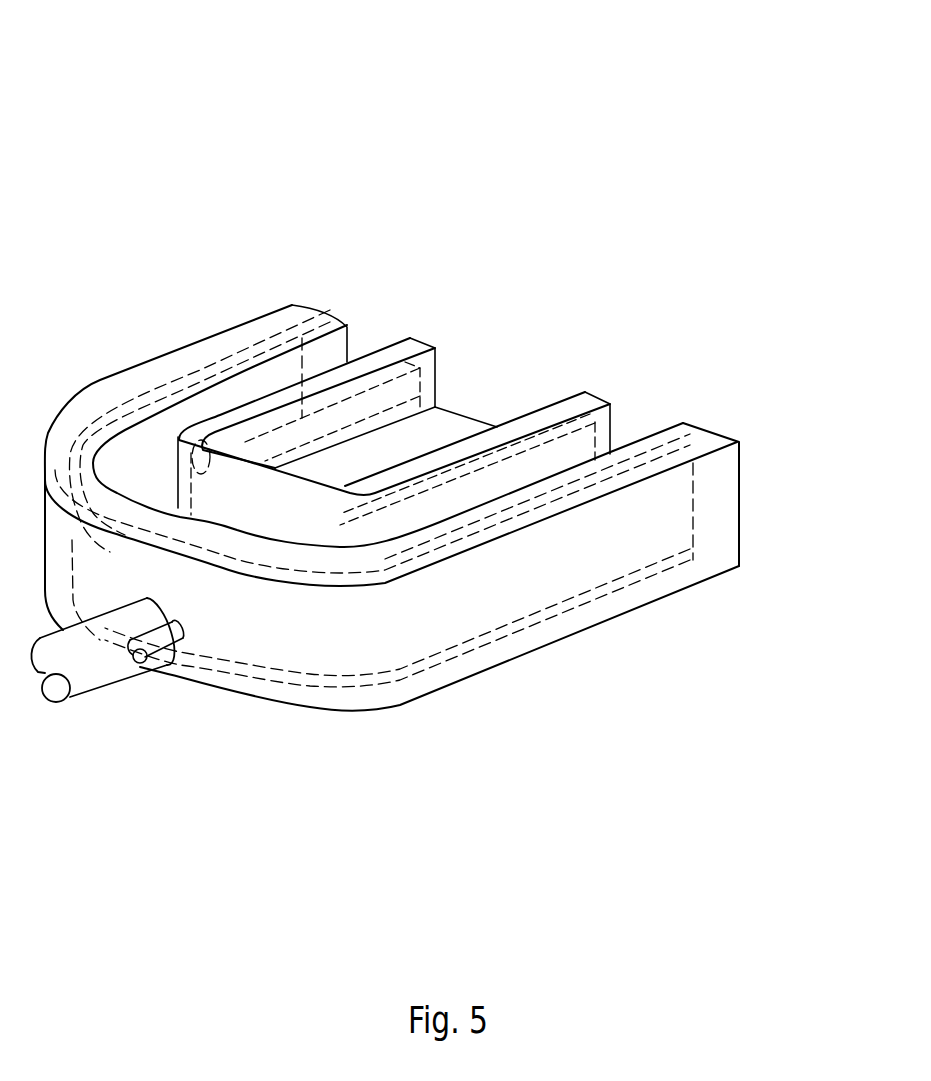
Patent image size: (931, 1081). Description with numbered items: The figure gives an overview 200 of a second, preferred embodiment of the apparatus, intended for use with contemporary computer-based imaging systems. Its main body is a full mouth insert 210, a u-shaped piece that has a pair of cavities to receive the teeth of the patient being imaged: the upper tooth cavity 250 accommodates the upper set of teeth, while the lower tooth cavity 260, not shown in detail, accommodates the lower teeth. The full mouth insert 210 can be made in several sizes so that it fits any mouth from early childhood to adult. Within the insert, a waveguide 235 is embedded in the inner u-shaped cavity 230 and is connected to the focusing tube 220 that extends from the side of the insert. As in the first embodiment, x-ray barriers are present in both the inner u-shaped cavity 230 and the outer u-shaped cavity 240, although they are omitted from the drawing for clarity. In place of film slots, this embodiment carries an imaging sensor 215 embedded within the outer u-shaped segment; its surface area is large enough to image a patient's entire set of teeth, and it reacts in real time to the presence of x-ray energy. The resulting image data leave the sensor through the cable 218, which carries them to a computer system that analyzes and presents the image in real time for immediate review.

The overview 200 is at (727, 90).
The full mouth insert 210 is at (402, 704).
The imaging sensor 215 is at (683, 560).
The cable 218 is at (163, 647).
The focusing tube 220 is at (95, 663).
The inner u-shaped cavity 230 is at (417, 340).
The waveguide 235 is at (582, 445).
The outer u-shaped cavity 240 is at (272, 325).
The upper tooth cavity 250 is at (363, 340).
The lower tooth cavity 260 is at (573, 625).